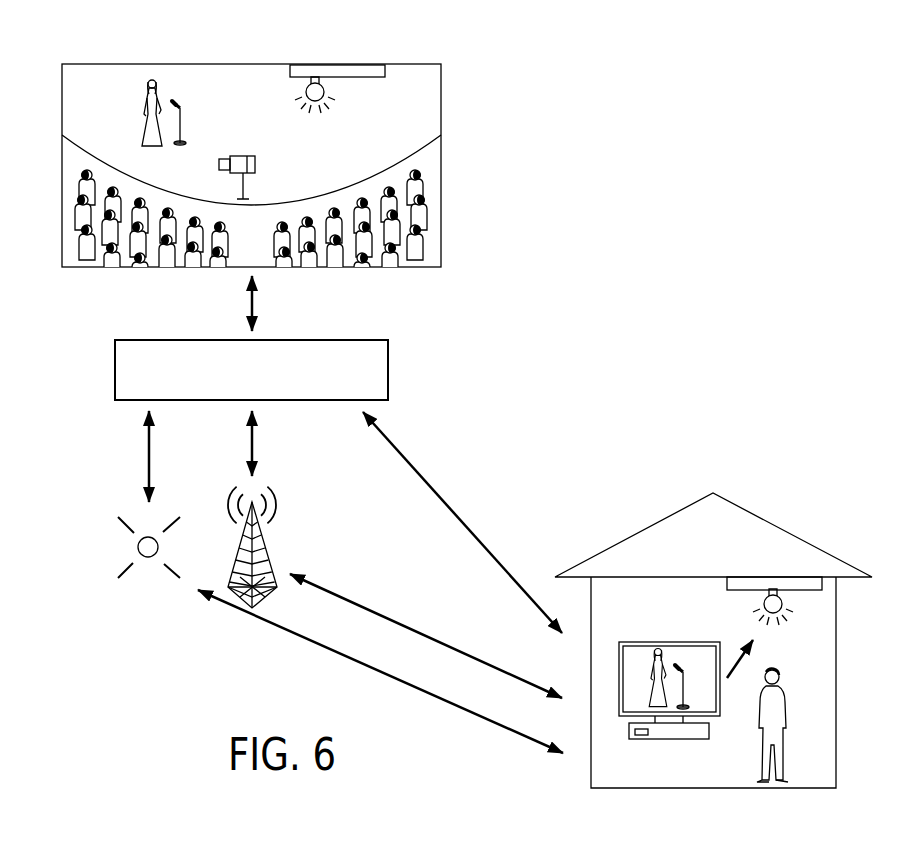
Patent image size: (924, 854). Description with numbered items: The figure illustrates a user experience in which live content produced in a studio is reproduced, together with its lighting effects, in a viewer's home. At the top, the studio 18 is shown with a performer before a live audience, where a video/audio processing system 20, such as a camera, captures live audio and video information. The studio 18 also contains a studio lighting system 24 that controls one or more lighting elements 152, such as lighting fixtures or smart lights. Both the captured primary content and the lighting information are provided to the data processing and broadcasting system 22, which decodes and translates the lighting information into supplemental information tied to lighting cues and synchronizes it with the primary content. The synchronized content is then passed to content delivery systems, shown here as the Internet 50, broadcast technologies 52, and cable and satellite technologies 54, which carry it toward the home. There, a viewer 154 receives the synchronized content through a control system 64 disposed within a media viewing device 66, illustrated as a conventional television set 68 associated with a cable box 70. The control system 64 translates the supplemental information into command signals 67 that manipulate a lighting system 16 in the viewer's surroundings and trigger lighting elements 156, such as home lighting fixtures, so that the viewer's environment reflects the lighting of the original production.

The studio 18 is at (463, 99).
The studio lighting system 24 is at (356, 68).
The lighting element 152 is at (338, 114).
The video/audio processing system 20 is at (240, 156).
The data processing and broadcasting system 22 is at (388, 366).
The Internet 50 is at (471, 519).
The cable and satellite technologies 54 is at (109, 528).
The broadcast technologies 52 is at (281, 540).
The viewer 154 is at (799, 757).
The lighting system 16 is at (742, 581).
The lighting element 156 is at (783, 600).
The media viewing device 66 is at (679, 637).
The television set 68 is at (669, 641).
The cable box 70 is at (672, 739).
The control system 64 is at (635, 733).
The command signal 67 is at (735, 667).